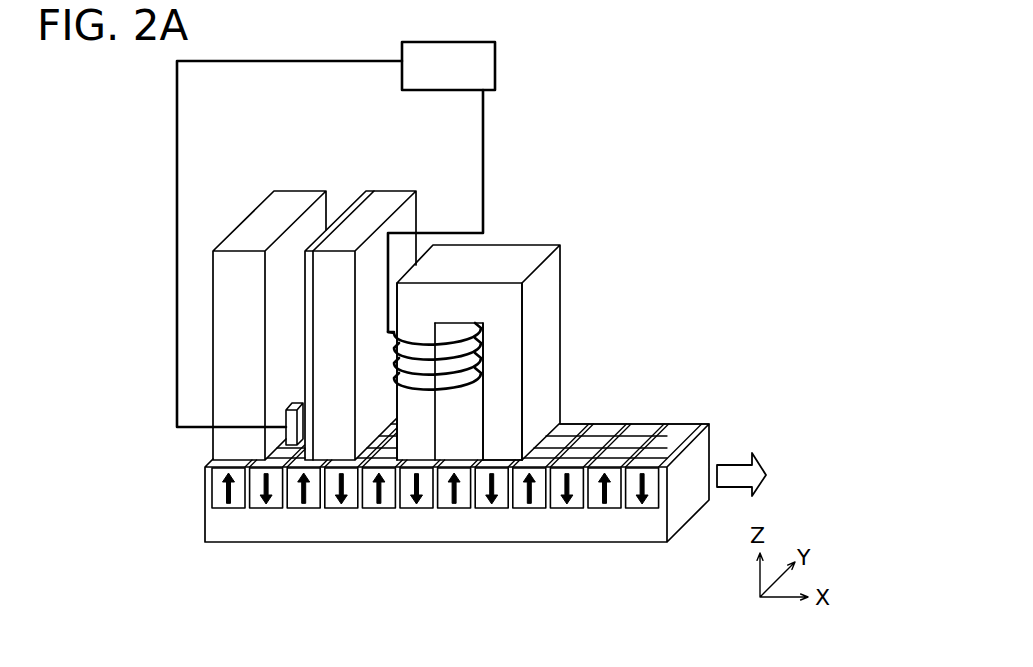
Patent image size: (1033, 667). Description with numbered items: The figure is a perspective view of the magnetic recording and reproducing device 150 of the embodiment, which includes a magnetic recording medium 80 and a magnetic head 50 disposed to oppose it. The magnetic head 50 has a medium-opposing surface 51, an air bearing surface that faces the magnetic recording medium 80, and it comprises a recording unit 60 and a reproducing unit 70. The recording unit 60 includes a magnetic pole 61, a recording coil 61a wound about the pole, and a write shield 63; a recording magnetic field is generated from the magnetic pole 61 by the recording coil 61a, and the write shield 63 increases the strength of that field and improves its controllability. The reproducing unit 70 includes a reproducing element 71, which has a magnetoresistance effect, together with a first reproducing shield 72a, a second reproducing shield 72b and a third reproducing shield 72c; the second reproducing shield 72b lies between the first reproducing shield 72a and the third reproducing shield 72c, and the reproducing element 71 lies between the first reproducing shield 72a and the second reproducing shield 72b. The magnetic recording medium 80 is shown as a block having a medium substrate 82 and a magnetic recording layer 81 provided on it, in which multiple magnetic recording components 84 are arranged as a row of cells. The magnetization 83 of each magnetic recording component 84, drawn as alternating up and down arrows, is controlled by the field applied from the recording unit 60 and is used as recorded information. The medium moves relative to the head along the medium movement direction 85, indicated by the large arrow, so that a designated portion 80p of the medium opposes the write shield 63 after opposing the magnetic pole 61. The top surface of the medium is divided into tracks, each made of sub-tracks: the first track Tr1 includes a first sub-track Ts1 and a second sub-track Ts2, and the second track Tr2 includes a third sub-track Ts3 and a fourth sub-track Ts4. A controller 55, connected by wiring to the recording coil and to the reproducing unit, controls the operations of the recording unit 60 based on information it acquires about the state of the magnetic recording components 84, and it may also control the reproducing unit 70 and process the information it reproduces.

The magnetic recording and reproducing device 150 is at (627, 96).
The magnetic head 50 is at (601, 250).
The controller 55 is at (496, 68).
The reproducing unit 70 is at (442, 133).
The reproducing element 71 is at (292, 402).
The first reproducing shield 72a is at (288, 197).
The second reproducing shield 72b is at (365, 197).
The third reproducing shield 72c is at (387, 197).
The recording unit 60 is at (568, 622).
The magnetic pole 61 is at (417, 427).
The recording coil 61a is at (460, 393).
The write shield 63 is at (513, 418).
The medium-opposing surface 51 is at (508, 413).
The magnetic recording medium 80 is at (489, 451).
The magnetic recording layer 81 is at (238, 502).
The medium substrate 82 is at (278, 520).
The magnetization 83 is at (303, 500).
The magnetic recording component 84 is at (298, 500).
The designated portion 80p is at (613, 498).
The medium movement direction 85 is at (735, 463).
The first track Tr1 is at (699, 327).
The second track Tr2 is at (788, 372).
The first sub-track Ts1 is at (637, 450).
The second sub-track Ts2 is at (627, 452).
The third sub-track Ts3 is at (615, 463).
The fourth sub-track Ts4 is at (642, 462).